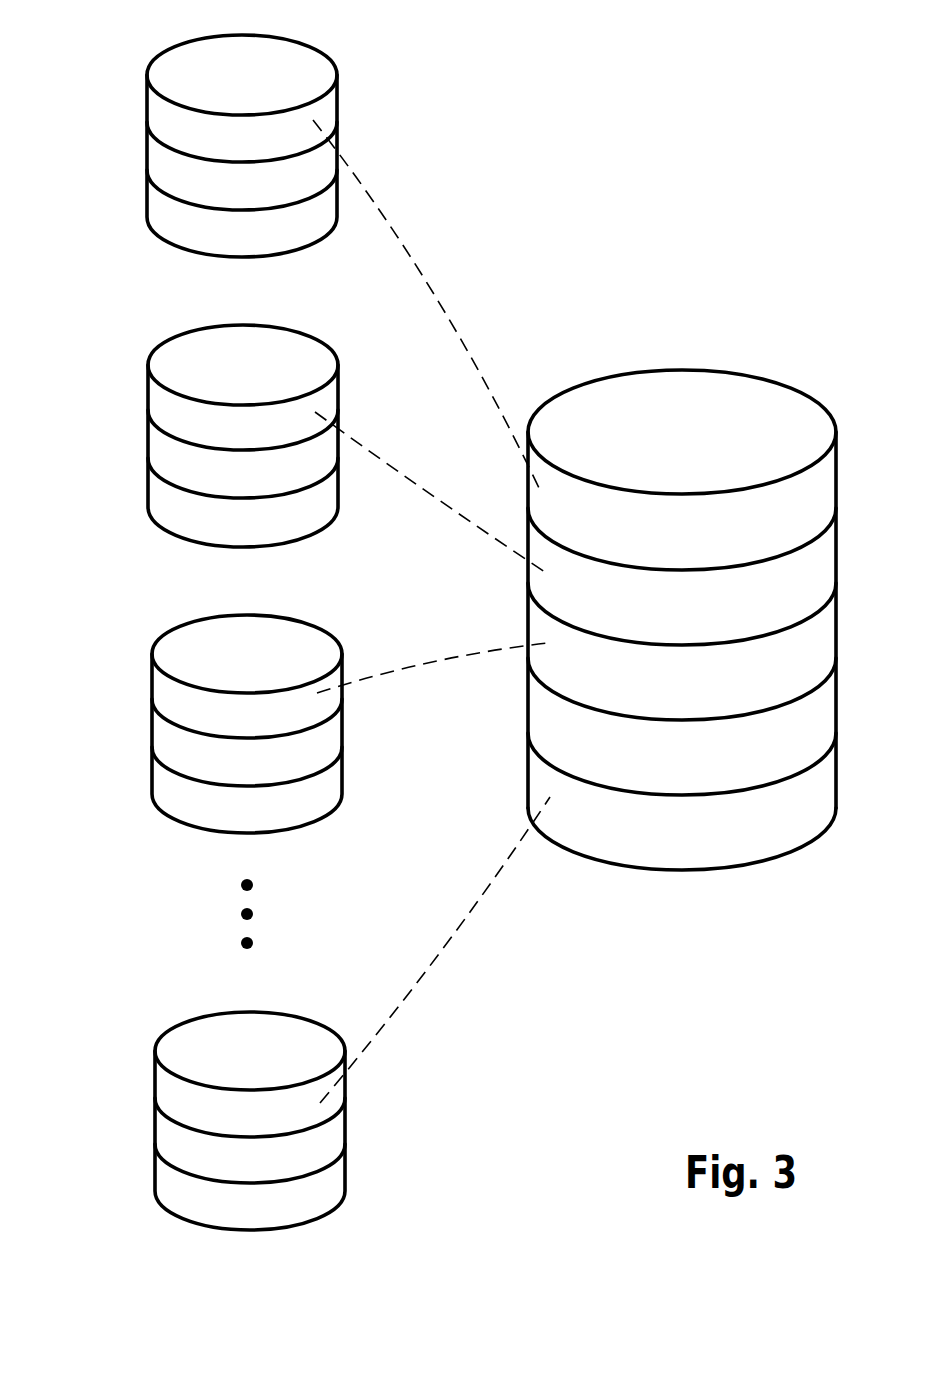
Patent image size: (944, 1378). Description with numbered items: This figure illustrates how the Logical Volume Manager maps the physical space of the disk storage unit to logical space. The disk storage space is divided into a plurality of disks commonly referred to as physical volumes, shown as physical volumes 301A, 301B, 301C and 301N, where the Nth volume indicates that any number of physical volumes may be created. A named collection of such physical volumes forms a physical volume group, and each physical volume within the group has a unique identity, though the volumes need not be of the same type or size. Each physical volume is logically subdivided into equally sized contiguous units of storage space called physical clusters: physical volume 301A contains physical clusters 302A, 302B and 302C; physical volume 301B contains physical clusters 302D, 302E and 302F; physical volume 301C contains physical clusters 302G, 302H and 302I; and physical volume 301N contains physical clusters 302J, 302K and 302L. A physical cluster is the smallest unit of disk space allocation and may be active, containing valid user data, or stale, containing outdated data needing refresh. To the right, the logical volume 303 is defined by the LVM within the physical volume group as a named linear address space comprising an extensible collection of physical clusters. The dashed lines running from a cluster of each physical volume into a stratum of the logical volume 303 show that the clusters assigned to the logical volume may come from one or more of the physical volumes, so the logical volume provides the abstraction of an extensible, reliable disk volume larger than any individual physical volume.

The physical volume 301A is at (197, 50).
The physical volume 301B is at (200, 340).
The physical volume 301C is at (202, 627).
The physical volume 301N is at (205, 1023).
The physical cluster 302A is at (155, 118).
The physical cluster 302B is at (155, 160).
The physical cluster 302C is at (155, 214).
The physical cluster 302D is at (157, 407).
The physical cluster 302E is at (157, 450).
The physical cluster 302F is at (157, 506).
The physical cluster 302G is at (161, 695).
The physical cluster 302H is at (161, 738).
The physical cluster 302I is at (161, 794).
The physical cluster 302J is at (163, 1092).
The physical cluster 302K is at (163, 1135).
The physical cluster 302L is at (163, 1192).
The logical volume 303 is at (730, 392).